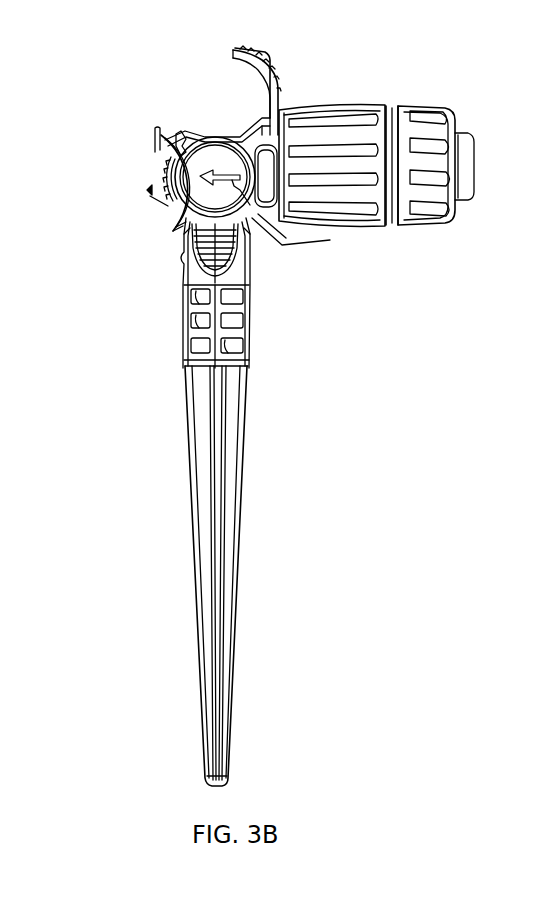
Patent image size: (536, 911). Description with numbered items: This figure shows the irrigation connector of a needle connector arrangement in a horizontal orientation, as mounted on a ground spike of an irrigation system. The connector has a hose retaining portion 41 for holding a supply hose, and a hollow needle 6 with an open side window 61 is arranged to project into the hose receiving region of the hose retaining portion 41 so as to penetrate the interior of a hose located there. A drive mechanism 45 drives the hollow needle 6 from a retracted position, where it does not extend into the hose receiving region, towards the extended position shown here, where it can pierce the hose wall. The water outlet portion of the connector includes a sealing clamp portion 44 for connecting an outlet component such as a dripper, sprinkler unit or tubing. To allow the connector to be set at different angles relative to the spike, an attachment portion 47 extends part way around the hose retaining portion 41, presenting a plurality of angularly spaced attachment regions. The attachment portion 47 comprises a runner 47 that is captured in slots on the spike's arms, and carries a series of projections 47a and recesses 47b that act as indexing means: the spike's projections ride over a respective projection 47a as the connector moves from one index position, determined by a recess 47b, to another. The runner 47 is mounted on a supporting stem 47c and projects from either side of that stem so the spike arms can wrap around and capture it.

The hollow needle 6 is at (236, 166).
The hose retaining portion 41 is at (147, 162).
The sealing clamp portion 44 is at (421, 112).
The drive mechanism 45 is at (320, 115).
The attachment portion 47 is at (150, 190).
The projections 47a is at (158, 201).
The recesses 47b is at (176, 229).
The supporting stem 47c is at (153, 198).
The open side window 61 is at (228, 184).